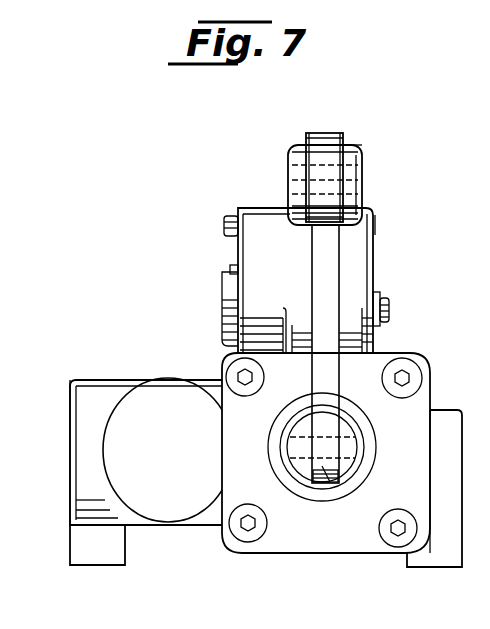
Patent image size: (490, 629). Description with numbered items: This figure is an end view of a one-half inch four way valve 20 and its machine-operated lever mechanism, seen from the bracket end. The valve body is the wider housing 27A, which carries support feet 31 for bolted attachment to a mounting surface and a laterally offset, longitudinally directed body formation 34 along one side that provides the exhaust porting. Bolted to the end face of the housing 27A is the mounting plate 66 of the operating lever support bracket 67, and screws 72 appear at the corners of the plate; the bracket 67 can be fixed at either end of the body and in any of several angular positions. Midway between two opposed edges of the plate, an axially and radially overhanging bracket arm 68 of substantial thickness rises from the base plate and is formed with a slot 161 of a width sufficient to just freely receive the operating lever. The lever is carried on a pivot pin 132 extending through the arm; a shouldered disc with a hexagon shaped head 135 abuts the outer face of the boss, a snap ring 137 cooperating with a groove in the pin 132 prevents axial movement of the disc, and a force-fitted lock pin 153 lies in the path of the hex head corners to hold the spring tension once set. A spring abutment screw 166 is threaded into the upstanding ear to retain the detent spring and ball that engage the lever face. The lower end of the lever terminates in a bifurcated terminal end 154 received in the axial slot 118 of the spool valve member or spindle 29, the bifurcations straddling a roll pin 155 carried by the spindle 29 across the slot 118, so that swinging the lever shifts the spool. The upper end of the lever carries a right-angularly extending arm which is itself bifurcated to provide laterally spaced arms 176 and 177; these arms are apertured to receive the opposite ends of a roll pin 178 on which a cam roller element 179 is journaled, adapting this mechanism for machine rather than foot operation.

The valve 20 is at (280, 556).
The mounting plate 66 is at (335, 555).
The screws 72 is at (245, 384).
The spindle 29 is at (350, 432).
The roll pin 155 is at (357, 456).
The bifurcated terminal end 154 is at (331, 483).
The axial slot 118 is at (318, 483).
The slot 161 is at (338, 258).
The bracket 67 is at (268, 205).
The bracket arm 68 is at (374, 206).
The arm 176 is at (292, 146).
The cam roller element 179 is at (330, 136).
The arm 177 is at (356, 146).
The roll pin 178 is at (358, 170).
The spring abutment screw 166 is at (226, 224).
The lock pin 153 is at (231, 268).
The hexagon shaped head 135 is at (222, 289).
The snap ring 137 is at (376, 295).
The pivot pin 132 is at (389, 308).
The body formation 34 is at (178, 380).
The support feet 31 is at (96, 565).
The housing 27A is at (82, 376).